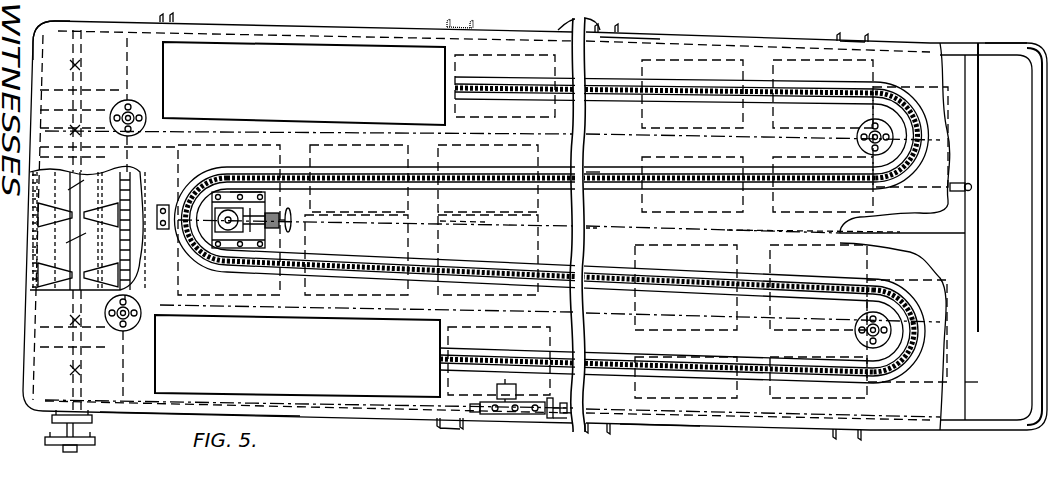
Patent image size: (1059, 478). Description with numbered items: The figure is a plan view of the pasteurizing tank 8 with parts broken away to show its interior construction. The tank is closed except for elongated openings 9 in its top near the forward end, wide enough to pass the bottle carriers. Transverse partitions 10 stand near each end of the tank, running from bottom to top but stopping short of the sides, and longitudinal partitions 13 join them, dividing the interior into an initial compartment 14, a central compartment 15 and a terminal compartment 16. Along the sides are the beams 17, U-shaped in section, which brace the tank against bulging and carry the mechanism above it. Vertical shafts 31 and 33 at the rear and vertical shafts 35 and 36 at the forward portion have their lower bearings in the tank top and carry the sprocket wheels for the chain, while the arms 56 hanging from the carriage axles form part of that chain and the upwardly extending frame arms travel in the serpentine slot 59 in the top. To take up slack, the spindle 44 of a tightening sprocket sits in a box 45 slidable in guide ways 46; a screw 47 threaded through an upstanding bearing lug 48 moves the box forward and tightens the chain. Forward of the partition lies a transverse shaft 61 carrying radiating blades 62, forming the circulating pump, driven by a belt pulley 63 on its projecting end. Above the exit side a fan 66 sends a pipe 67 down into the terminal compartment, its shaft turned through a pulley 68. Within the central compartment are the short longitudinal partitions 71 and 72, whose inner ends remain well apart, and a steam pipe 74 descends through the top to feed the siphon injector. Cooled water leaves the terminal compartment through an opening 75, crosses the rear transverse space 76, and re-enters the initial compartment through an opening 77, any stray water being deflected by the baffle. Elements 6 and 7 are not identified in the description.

The end frame member 6 is at (992, 65).
The frame corner member 7 is at (161, 447).
The pasteurizing tank 8 is at (190, 412).
The elongated openings 9 is at (279, 46).
The transverse partitions 10 is at (978, 283).
The longitudinal partitions 13 is at (337, 122).
The initial compartment 14 is at (626, 65).
The central compartment 15 is at (642, 230).
The terminal compartment 16 is at (660, 439).
The beams 17 is at (168, 21).
The vertical shaft 31 is at (878, 335).
The vertical shaft 33 is at (877, 133).
The vertical shaft 35 is at (116, 330).
The vertical shaft 36 is at (131, 107).
The spindle 44 is at (228, 230).
The box 45 is at (245, 245).
The guide ways 46 is at (270, 188).
The screw 47 is at (282, 220).
The bearing lug 48 is at (268, 228).
The arm 56 is at (507, 88).
The serpentine slot 59 is at (620, 182).
The shaft 61 is at (72, 235).
The blades 62 is at (77, 187).
The belt pulley 63 is at (80, 448).
The fan 66 is at (527, 410).
The pipe 67 is at (571, 418).
The pulley 68 is at (517, 393).
The short longitudinal partition 71 is at (727, 230).
The short longitudinal partition 72 is at (473, 230).
The steam pipe 74 is at (973, 186).
The opening 75 is at (973, 382).
The rear transverse space 76 is at (992, 231).
The opening 77 is at (987, 105).